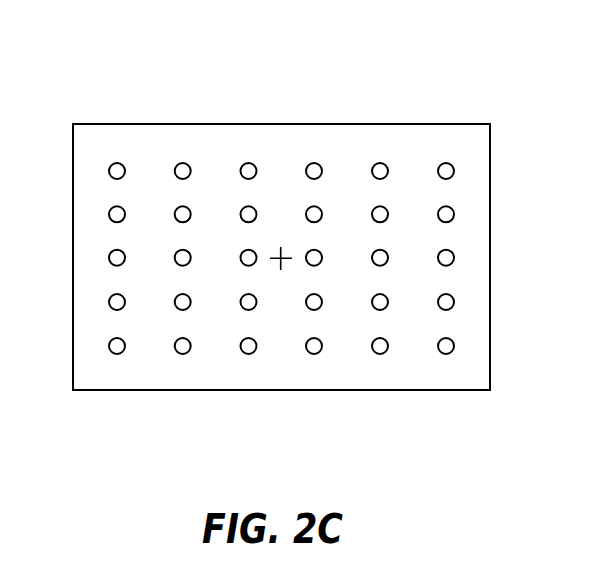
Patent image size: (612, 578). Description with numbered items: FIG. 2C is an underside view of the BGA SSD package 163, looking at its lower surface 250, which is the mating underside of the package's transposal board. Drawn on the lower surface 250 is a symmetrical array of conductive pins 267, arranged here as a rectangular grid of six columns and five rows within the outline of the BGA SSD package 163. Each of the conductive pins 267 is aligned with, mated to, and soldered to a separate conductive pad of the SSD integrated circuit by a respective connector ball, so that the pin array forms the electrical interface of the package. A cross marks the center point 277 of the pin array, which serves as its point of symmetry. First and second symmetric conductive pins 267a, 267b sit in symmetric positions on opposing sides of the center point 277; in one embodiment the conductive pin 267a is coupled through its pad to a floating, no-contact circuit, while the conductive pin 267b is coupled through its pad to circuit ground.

The BGA SSD package 163 is at (480, 122).
The lower surface 250 is at (347, 355).
The conductive pins 267 is at (250, 163).
The first symmetric conductive pin 267a is at (115, 162).
The second symmetric conductive pin 267b is at (452, 352).
The center point 277 is at (274, 267).